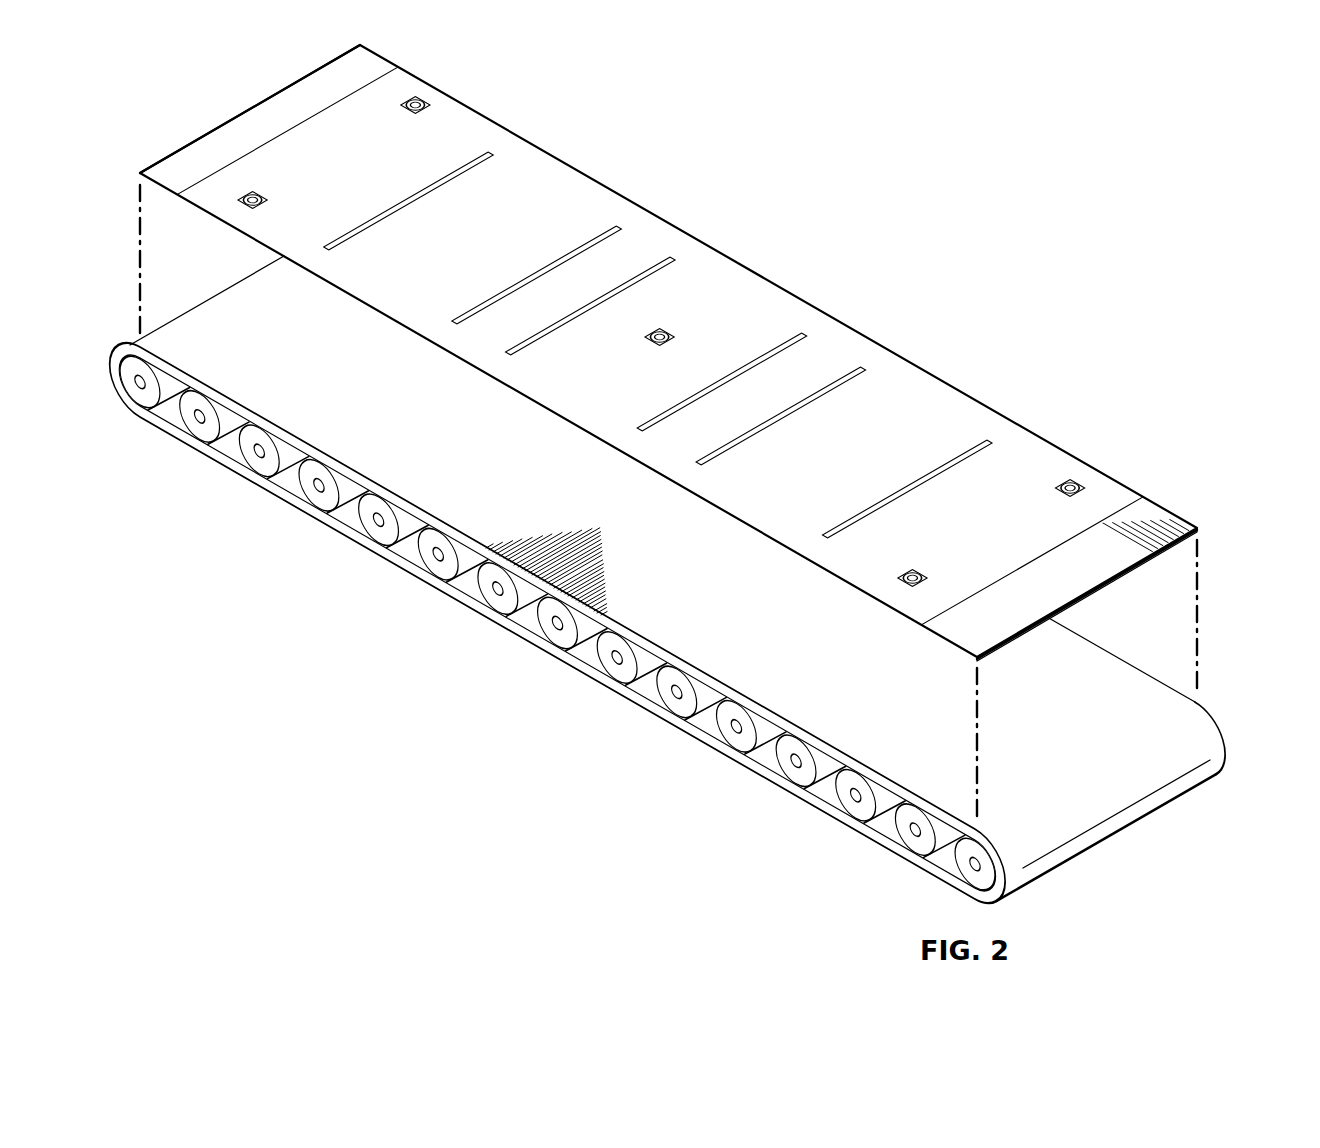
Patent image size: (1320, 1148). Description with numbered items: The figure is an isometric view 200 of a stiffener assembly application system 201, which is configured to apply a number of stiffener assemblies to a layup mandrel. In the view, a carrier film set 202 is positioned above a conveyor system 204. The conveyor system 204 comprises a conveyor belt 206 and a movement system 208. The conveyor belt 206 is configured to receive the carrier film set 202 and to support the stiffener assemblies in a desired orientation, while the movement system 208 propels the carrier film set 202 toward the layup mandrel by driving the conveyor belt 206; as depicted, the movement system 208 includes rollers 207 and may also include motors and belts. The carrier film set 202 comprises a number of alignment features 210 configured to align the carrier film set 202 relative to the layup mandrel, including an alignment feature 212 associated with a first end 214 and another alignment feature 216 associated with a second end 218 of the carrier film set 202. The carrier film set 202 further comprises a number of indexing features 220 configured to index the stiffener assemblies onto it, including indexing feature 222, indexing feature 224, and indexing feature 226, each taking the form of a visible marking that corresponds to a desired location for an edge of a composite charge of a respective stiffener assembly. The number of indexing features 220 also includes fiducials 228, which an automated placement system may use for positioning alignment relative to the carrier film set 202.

The view 200 is at (1025, 105).
The stiffener assembly application system 201 is at (1025, 237).
The carrier film set 202 is at (775, 237).
The conveyor system 204 is at (1117, 864).
The conveyor belt 206 is at (912, 710).
The rollers 207 is at (418, 568).
The movement system 208 is at (818, 853).
The number of alignment features 210 is at (1062, 418).
The alignment feature 212 is at (1058, 576).
The first end 214 is at (1165, 569).
The alignment feature 216 is at (287, 131).
The second end 218 is at (223, 104).
The number of indexing features 220 is at (658, 345).
The indexing feature 222 is at (907, 489).
The indexing feature 224 is at (722, 382).
The indexing feature 226 is at (537, 275).
The fiducials 228 is at (284, 150).